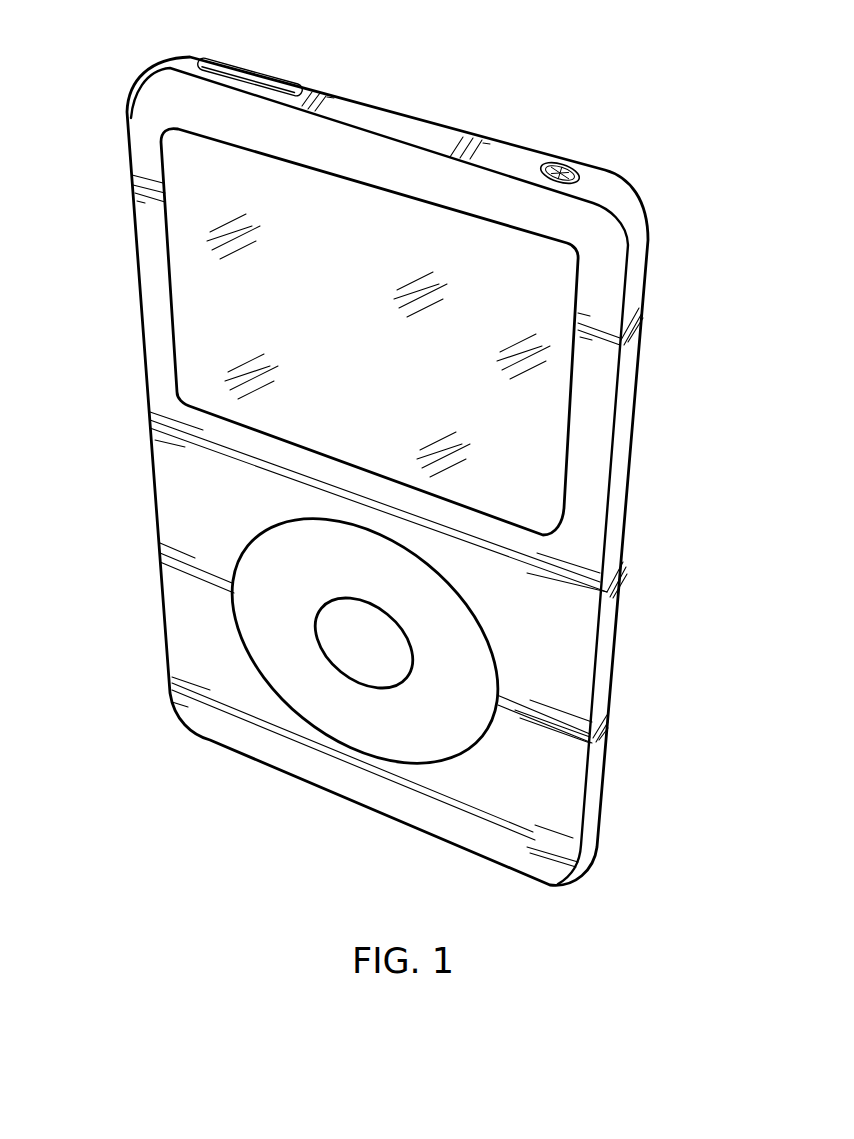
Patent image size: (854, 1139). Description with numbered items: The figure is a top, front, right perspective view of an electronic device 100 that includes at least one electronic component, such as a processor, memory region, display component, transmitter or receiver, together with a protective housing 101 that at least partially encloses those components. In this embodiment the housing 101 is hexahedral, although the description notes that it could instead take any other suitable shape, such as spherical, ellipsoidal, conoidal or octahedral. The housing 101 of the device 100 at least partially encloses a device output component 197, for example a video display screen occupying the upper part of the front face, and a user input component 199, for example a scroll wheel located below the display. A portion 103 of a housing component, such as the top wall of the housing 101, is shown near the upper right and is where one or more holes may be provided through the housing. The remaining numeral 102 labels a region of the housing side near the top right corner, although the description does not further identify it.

The electronic device 100 is at (441, 70).
The housing 101 is at (140, 299).
The side wall of housing 102 is at (627, 212).
The housing component portion 103 is at (563, 165).
The device output component 197 is at (187, 342).
The user input component 199 is at (247, 590).